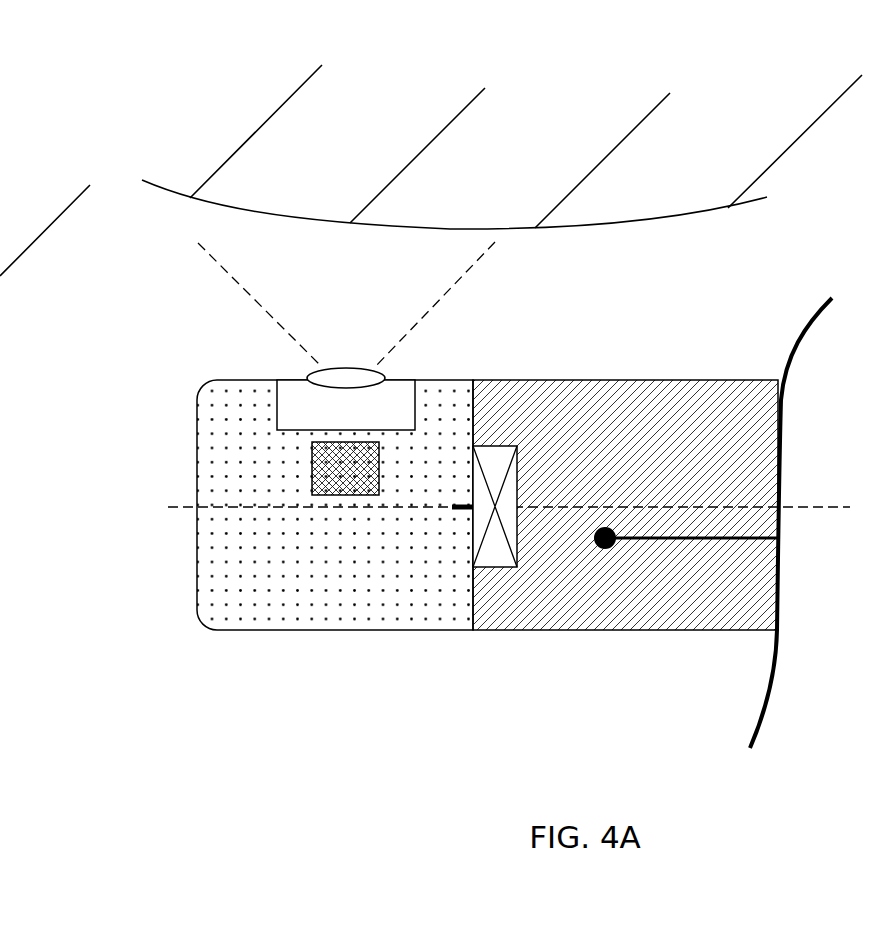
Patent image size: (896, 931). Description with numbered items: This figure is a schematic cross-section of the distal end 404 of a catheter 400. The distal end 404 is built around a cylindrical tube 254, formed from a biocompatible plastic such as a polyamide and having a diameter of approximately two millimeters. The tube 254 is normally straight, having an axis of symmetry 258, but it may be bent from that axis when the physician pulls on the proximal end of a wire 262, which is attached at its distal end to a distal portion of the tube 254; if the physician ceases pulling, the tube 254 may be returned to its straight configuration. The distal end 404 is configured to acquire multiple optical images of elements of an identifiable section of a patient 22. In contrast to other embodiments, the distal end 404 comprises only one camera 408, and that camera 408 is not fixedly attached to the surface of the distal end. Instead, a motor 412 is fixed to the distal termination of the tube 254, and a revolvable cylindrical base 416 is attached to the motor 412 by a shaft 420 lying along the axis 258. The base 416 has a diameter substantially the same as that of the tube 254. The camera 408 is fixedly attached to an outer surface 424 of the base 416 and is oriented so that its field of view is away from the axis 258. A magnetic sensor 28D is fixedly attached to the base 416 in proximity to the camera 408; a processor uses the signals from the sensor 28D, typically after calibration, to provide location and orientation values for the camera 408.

The patient 22 is at (300, 222).
The camera 408 is at (290, 380).
The revolvable cylindrical base 416 is at (262, 380).
The shaft 420 is at (465, 505).
The motor 412 is at (497, 446).
The wire 262 is at (737, 538).
The axis of symmetry 258 is at (818, 506).
The cylindrical tube 254 is at (620, 630).
The outer surface 424 is at (298, 630).
The magnetic sensor 28D is at (353, 496).
The catheter 400 is at (128, 688).
The distal end 404 is at (270, 713).